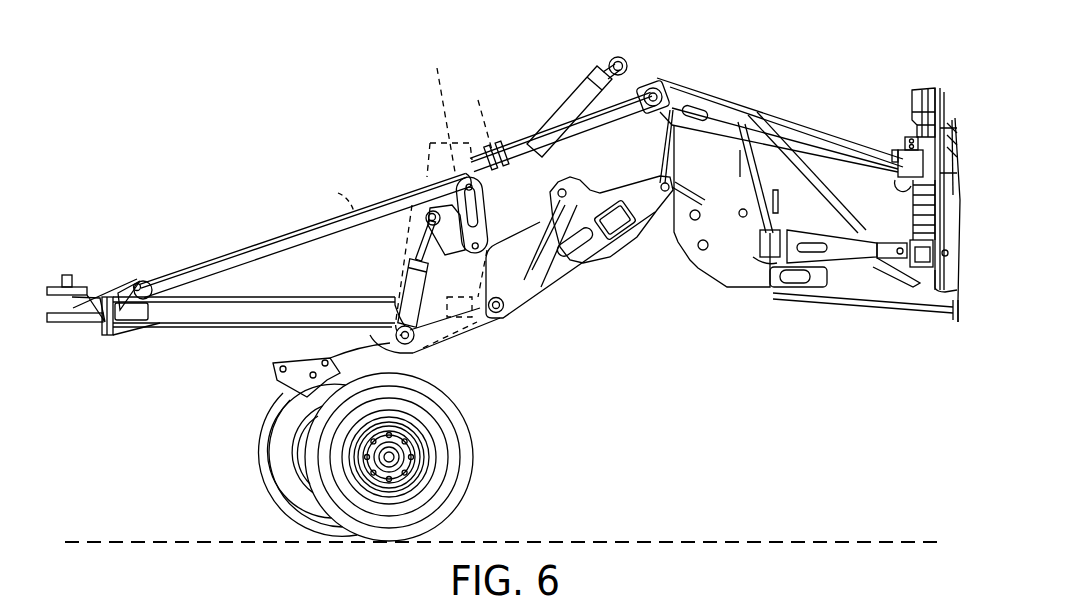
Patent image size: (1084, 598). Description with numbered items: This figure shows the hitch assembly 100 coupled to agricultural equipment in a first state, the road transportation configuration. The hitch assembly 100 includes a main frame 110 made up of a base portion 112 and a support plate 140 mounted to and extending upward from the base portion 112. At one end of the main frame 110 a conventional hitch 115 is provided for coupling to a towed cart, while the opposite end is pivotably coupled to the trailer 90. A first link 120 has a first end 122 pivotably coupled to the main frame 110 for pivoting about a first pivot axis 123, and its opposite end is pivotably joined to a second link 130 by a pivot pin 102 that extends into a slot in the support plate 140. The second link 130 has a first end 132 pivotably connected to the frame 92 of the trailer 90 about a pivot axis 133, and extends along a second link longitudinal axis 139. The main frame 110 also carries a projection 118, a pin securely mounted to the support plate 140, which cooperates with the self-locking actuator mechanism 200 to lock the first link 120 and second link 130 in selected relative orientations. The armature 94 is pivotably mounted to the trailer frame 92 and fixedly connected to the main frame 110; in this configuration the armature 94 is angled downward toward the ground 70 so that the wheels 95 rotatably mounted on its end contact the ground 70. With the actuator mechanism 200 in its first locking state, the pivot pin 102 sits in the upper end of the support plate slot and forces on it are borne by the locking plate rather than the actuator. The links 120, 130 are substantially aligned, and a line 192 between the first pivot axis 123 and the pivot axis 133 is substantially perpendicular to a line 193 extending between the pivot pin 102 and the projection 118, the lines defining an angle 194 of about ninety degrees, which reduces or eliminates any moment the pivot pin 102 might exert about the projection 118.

The ground 70 is at (630, 541).
The trailer 90 is at (816, 86).
The trailer frame 92 is at (690, 92).
The armature 94 is at (604, 274).
The wheels 95 is at (472, 424).
The hitch assembly 100 is at (288, 94).
The pivot pin 102 is at (456, 180).
The main frame 110 is at (200, 350).
The base portion 112 is at (245, 325).
The hitch 115 is at (66, 274).
The projection 118 is at (493, 248).
The first link 120 is at (248, 251).
The first end 122 is at (152, 260).
The first pivot axis 123 is at (138, 282).
The second link 130 is at (578, 128).
The first end 132 is at (634, 76).
The pivot axis 133 is at (652, 84).
The second link longitudinal axis 139 is at (767, 595).
The support plate 140 is at (432, 158).
The line 192 is at (352, 207).
The line 193 is at (446, 107).
The angle 194 is at (484, 112).
The self-locking actuator mechanism 200 is at (386, 282).